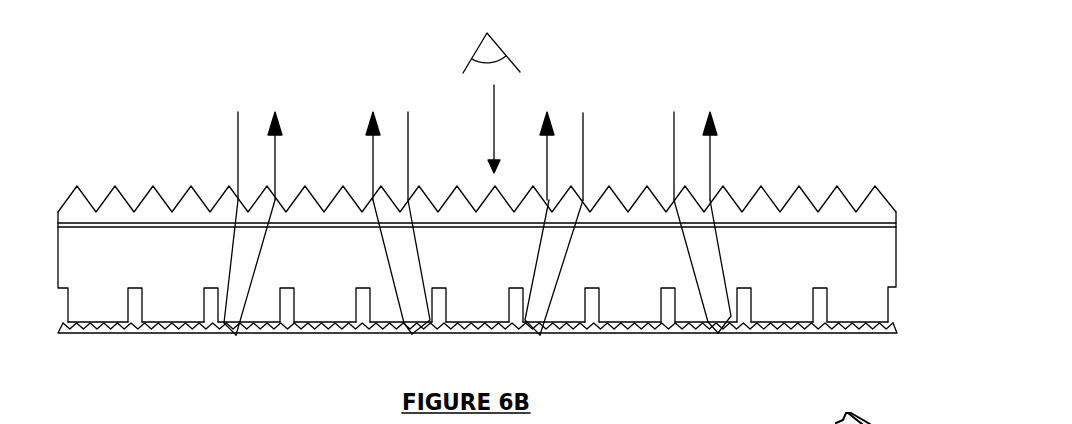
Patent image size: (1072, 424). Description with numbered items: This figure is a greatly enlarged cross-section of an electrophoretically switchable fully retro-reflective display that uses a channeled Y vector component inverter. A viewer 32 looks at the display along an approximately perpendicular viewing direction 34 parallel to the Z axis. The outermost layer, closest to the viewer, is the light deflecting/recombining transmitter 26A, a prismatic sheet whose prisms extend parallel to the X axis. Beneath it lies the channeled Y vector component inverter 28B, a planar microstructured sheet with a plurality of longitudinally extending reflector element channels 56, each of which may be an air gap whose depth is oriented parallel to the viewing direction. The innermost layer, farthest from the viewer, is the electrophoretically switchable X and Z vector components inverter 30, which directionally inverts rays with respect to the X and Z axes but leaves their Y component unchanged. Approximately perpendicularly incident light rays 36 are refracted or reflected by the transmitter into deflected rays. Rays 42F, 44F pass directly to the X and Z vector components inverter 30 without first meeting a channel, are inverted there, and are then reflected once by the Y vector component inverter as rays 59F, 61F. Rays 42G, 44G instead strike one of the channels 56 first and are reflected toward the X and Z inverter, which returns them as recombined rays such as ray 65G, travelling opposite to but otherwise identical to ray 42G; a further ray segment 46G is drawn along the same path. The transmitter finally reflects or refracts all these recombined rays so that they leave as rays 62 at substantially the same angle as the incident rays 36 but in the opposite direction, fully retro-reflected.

The light deflecting/recombining transmitter 26A is at (898, 192).
The channeled Y vector component inverter 28B is at (903, 263).
The X and Z vector components inverter 30 is at (903, 323).
The reflector element channels 56 is at (207, 303).
The incident light rays 36 is at (238, 143).
The retro-reflected rays 62 is at (277, 160).
The viewing direction 34 is at (493, 133).
The viewer 32 is at (512, 45).
The deflected ray 42G is at (222, 270).
The recombined ray 65G is at (290, 257).
The light ray segment 46G is at (385, 262).
The deflected ray 44G is at (455, 256).
The reflected ray 59F is at (532, 268).
The deflected ray 42F is at (602, 258).
The deflected ray 44F is at (688, 268).
The reflected ray 61F is at (757, 252).